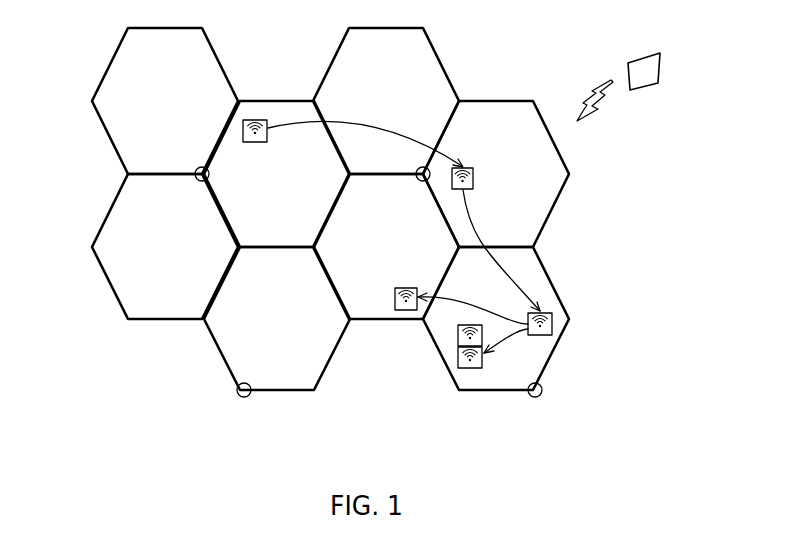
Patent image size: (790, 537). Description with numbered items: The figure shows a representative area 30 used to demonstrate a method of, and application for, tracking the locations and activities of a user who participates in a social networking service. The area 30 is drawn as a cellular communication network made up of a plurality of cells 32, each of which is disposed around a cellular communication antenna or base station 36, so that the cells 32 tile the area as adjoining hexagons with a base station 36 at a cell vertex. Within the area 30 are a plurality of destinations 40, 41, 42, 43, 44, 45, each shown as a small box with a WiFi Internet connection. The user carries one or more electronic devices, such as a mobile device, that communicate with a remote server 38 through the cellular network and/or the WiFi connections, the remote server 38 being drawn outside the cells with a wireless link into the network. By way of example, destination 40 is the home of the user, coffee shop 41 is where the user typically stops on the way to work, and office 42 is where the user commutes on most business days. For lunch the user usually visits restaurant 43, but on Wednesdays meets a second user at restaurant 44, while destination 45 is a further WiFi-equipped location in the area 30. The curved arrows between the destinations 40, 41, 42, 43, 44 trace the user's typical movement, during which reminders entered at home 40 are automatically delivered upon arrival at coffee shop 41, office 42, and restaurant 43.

The representative area 30 is at (612, 228).
The cell 32 is at (110, 211).
The base station 36 is at (200, 166).
The remote server 38 is at (660, 66).
The destination (home) 40 is at (253, 119).
The destination (coffee shop) 41 is at (474, 178).
The destination (office) 42 is at (553, 326).
The destination (restaurant) 43 is at (458, 361).
The destination (restaurant) 44 is at (400, 311).
The destination 45 is at (458, 334).